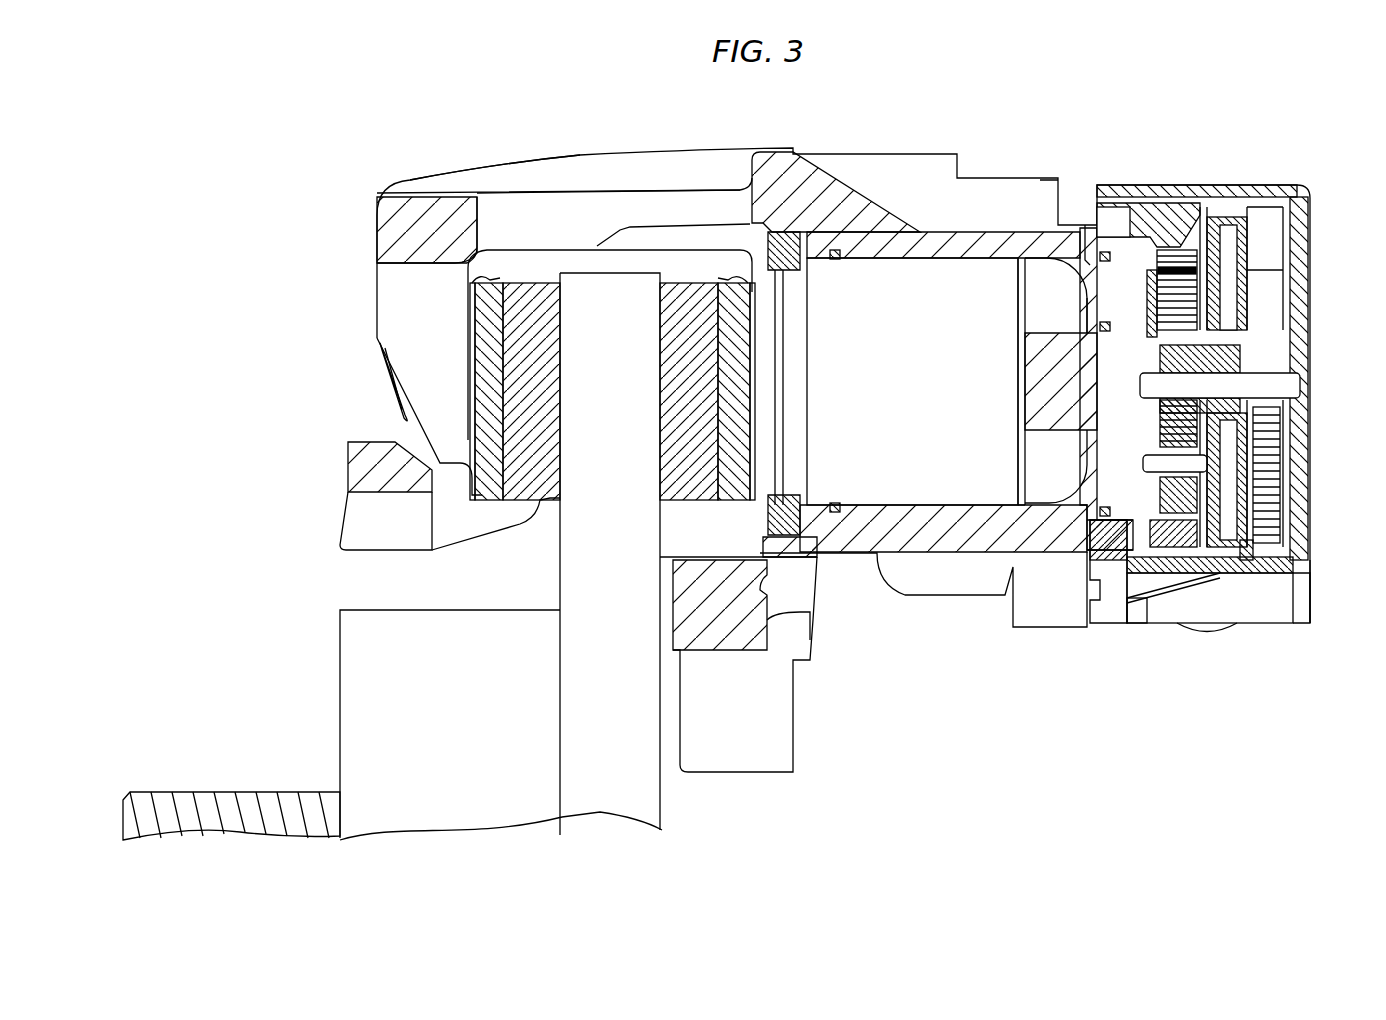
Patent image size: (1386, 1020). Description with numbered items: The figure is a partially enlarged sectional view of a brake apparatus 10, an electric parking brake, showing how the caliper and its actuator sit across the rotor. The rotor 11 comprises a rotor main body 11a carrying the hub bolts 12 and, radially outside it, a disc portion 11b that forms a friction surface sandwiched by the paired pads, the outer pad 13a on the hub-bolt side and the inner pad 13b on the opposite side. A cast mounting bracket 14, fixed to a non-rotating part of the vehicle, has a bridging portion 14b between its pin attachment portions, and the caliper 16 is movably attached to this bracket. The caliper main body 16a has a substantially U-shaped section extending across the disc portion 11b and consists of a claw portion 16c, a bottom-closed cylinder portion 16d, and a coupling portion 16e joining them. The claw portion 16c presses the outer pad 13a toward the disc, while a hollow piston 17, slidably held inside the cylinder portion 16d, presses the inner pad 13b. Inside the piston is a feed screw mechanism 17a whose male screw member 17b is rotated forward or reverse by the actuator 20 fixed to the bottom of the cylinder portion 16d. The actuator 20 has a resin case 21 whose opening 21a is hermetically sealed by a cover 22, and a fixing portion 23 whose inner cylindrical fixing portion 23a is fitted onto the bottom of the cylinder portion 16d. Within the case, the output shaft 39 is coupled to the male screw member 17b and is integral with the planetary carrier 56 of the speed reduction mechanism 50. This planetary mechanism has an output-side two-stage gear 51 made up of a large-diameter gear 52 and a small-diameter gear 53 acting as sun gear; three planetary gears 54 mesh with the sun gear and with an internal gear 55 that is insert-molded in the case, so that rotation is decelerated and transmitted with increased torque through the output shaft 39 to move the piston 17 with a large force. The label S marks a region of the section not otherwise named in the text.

The brake apparatus 10 is at (904, 695).
The rotor 11 is at (338, 630).
The rotor main body 11a is at (457, 733).
The disc portion 11b is at (593, 730).
The hub bolt 12 is at (207, 808).
The outer pad 13a is at (533, 367).
The inner pad 13b is at (695, 385).
The mounting bracket 14 is at (760, 639).
The bridging portion 14b is at (372, 462).
The caliper 16 is at (376, 230).
The caliper main body 16a is at (425, 178).
The claw portion 16c is at (425, 372).
The cylinder portion 16d is at (927, 240).
The coupling portion 16e is at (590, 215).
The piston 17 is at (927, 401).
The feed screw mechanism 17a is at (1042, 330).
The male screw member 17b is at (1030, 398).
The actuator 20 is at (1227, 183).
The case 21 is at (1170, 210).
The opening 21a is at (1280, 222).
The cover 22 is at (1300, 472).
The fixing portion 23 is at (1209, 580).
The cylindrical fixing portion 23a is at (1100, 555).
The output shaft 39 is at (1066, 420).
The speed reduction mechanism 50 is at (1150, 220).
The output-side two-stage gear 51 is at (1244, 308).
The large-diameter gear 52 is at (1225, 540).
The small-diameter gear 53 is at (1275, 372).
The planetary gear 54 is at (1185, 292).
The internal gear 55 is at (1190, 580).
The planetary carrier 56 is at (1083, 245).
The space S is at (1147, 607).